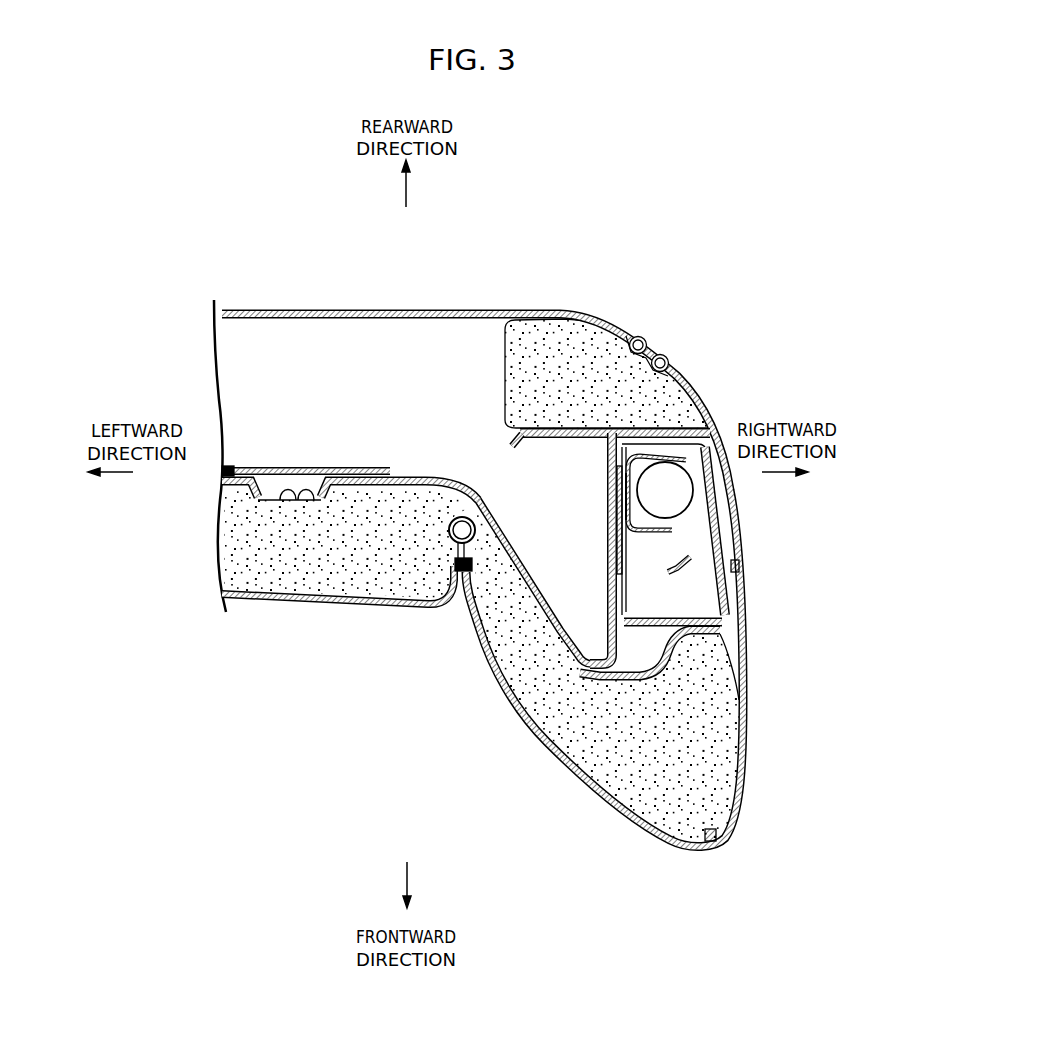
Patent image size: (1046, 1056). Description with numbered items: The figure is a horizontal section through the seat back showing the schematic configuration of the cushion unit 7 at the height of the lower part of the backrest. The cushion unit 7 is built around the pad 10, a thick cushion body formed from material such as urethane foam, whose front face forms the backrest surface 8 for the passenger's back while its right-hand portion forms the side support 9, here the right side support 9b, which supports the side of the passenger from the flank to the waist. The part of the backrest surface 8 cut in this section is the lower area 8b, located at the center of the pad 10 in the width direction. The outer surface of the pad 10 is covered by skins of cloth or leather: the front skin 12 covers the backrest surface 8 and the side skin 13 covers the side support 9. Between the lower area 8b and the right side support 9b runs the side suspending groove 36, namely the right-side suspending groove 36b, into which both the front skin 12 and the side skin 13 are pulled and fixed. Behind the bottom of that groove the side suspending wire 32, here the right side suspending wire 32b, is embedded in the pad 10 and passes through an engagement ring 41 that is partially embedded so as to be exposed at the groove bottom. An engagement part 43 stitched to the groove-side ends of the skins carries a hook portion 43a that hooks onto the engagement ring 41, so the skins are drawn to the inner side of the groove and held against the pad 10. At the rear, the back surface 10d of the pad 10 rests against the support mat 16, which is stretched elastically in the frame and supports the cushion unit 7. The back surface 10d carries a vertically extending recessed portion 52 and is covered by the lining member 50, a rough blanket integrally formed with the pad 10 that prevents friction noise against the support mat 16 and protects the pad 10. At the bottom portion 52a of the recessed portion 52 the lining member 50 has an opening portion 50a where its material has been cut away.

The cushion unit 7 is at (648, 250).
The backrest surface 8 is at (338, 632).
The lower area 8b is at (347, 601).
The side support 9 is at (482, 580).
The right side support 9b is at (557, 740).
The pad 10 is at (518, 613).
The back surface 10d is at (233, 468).
The front skin 12 is at (350, 577).
The side skin 13 is at (647, 832).
The support mat 16 is at (246, 467).
The side suspending wire 32 is at (568, 457).
The right side suspending wire 32b is at (468, 518).
The side suspending groove 36 is at (535, 578).
The right-side suspending groove 36b is at (465, 548).
The engagement ring 41 is at (454, 518).
The engagement part 43 is at (431, 620).
The hook portion 43a is at (456, 566).
The lining member 50 is at (350, 455).
The opening portion 50a is at (273, 499).
The recessed portion 52 is at (278, 575).
The bottom portion 52a is at (292, 500).